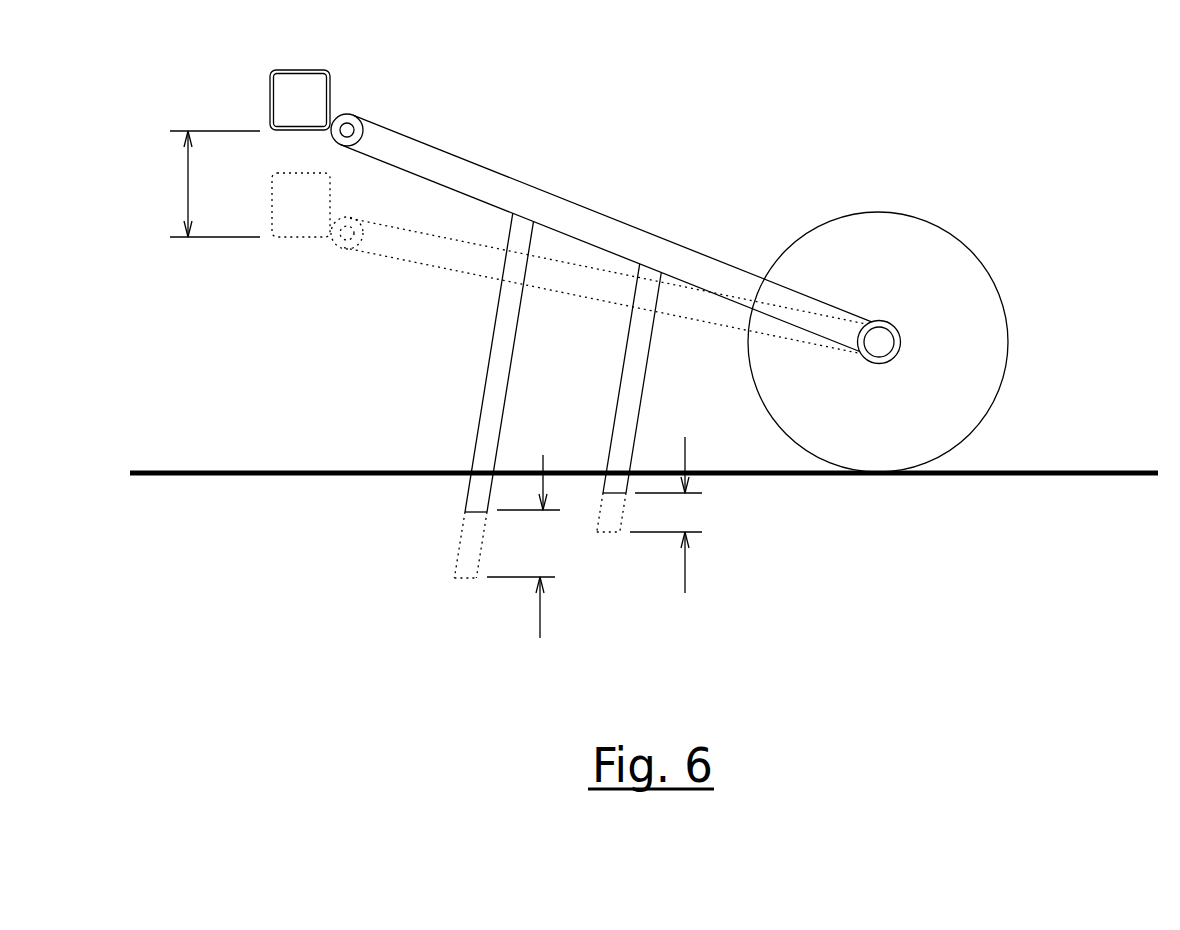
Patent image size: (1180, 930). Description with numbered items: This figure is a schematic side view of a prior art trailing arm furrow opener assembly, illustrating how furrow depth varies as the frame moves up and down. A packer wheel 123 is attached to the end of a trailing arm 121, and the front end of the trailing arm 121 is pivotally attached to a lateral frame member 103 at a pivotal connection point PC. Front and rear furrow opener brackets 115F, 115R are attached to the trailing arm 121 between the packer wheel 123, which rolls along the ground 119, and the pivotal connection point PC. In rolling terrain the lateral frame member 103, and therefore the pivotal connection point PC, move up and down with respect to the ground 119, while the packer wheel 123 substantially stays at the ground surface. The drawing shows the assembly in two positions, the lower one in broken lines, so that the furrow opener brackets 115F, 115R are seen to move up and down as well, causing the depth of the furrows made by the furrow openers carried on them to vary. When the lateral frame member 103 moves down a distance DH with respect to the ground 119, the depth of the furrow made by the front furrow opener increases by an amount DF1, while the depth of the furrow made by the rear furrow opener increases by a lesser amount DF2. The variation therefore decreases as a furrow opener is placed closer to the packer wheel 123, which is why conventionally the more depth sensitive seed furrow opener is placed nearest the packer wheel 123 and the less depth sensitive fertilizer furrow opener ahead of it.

The lateral frame member 103 is at (303, 70).
The pivotal connection point PC is at (349, 125).
The trailing arm 121 is at (573, 204).
The packer wheel 123 is at (960, 237).
The front furrow opener bracket 115F is at (477, 440).
The rear furrow opener bracket 115R is at (615, 425).
The ground 119 is at (1068, 468).
The frame displacement distance DH is at (202, 184).
The front furrow depth increase DF1 is at (544, 546).
The rear furrow depth increase DF2 is at (689, 515).